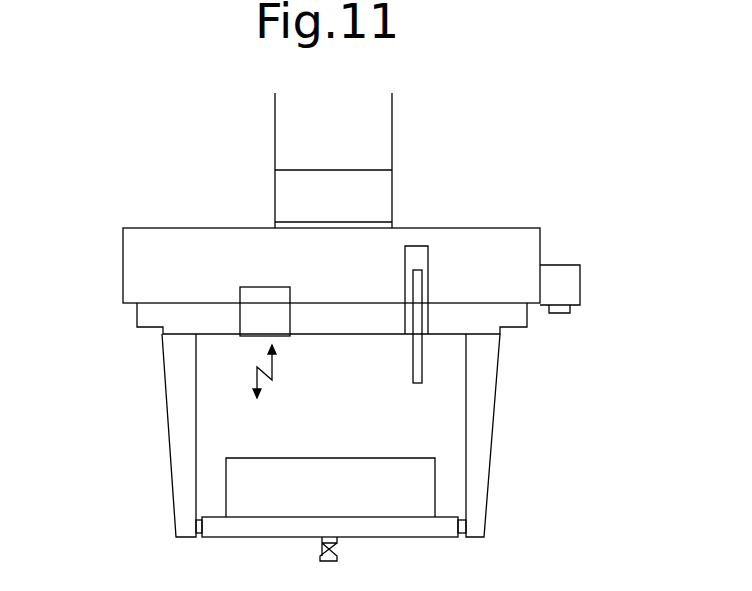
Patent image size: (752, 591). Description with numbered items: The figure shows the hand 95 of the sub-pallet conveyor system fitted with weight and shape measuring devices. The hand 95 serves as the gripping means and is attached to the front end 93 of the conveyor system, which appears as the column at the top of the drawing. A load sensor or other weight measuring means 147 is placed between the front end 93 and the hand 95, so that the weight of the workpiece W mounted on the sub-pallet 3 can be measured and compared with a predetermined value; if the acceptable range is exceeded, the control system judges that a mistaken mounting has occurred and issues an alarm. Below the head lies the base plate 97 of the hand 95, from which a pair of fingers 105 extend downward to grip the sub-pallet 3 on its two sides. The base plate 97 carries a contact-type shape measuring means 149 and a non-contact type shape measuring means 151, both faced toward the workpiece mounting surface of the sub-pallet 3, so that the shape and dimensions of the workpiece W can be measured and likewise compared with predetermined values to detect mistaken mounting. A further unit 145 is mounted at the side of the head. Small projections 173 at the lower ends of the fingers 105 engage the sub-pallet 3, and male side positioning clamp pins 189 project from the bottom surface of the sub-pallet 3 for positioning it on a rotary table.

The hand 95 is at (190, 212).
The front end 93 is at (365, 135).
The weight measuring means 147 is at (372, 203).
The base plate 97 is at (142, 317).
The non-contact type shape measuring means 151 is at (263, 292).
The contact-type shape measuring means 149 is at (417, 262).
The side unit 145 is at (567, 290).
The fingers 105 is at (485, 398).
The workpiece W is at (347, 475).
The sub-pallet 3 is at (410, 533).
The projection 173 is at (452, 516).
The male side positioning clamp pins 189 is at (320, 553).